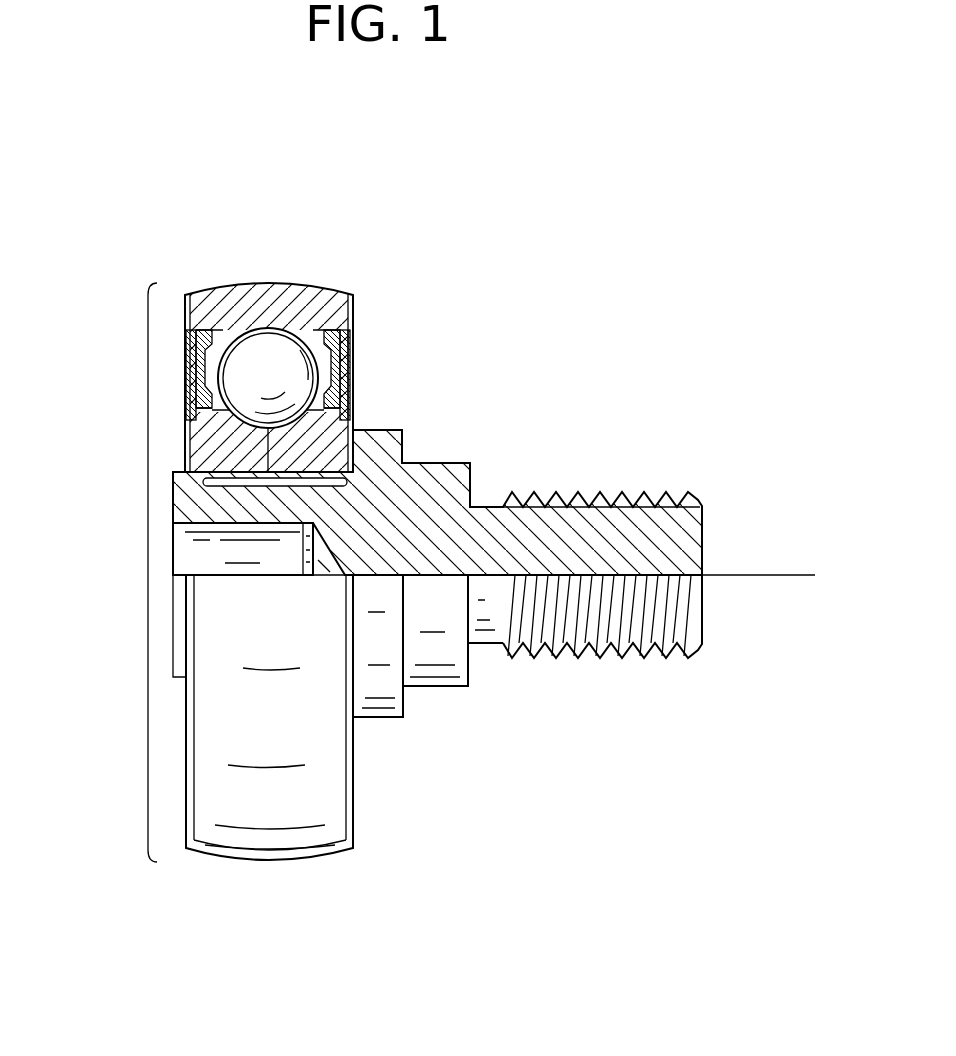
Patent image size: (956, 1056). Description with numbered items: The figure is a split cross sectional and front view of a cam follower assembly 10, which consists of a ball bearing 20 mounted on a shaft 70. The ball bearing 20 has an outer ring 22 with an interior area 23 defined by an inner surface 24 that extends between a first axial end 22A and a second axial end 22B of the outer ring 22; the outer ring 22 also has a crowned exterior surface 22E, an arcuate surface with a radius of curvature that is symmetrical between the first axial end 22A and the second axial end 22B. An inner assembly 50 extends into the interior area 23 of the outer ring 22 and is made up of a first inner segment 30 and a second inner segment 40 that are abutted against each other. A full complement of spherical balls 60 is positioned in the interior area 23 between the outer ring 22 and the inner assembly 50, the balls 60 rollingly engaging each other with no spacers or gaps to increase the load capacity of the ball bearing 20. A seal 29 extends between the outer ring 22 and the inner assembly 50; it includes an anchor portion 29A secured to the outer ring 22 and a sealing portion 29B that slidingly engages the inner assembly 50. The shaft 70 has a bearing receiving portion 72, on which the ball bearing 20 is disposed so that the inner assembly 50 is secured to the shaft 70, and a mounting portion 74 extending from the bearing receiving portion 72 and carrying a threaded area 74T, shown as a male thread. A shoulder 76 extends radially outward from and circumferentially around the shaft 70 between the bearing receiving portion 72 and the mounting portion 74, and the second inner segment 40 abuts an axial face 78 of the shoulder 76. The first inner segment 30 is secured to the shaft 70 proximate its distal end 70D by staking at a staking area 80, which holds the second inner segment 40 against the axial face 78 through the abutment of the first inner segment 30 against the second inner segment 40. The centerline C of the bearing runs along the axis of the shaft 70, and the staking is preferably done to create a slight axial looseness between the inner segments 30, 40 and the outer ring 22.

The cam follower assembly 10 is at (443, 178).
The ball bearing 20 is at (147, 673).
The outer ring 22 is at (322, 305).
The first axial end 22A is at (185, 313).
The second axial end 22B is at (357, 318).
The crowned exterior surface 22E is at (240, 862).
The interior area 23 is at (353, 352).
The inner surface 24 is at (205, 376).
The seal 29 is at (208, 388).
The anchor portion 29A is at (212, 353).
The sealing portion 29B is at (210, 405).
The first inner segment 30 is at (208, 450).
The second inner segment 40 is at (340, 447).
The inner assembly 50 is at (270, 485).
The balls 60 is at (255, 357).
The shaft 70 is at (492, 459).
The distal end 70D is at (174, 512).
The bearing receiving portion 72 is at (345, 508).
The mounting portion 74 is at (635, 665).
The threaded area 74T is at (493, 490).
The shoulder 76 is at (375, 695).
The axial face 78 is at (352, 683).
The staking area 80 is at (178, 473).
The centerline C is at (758, 575).